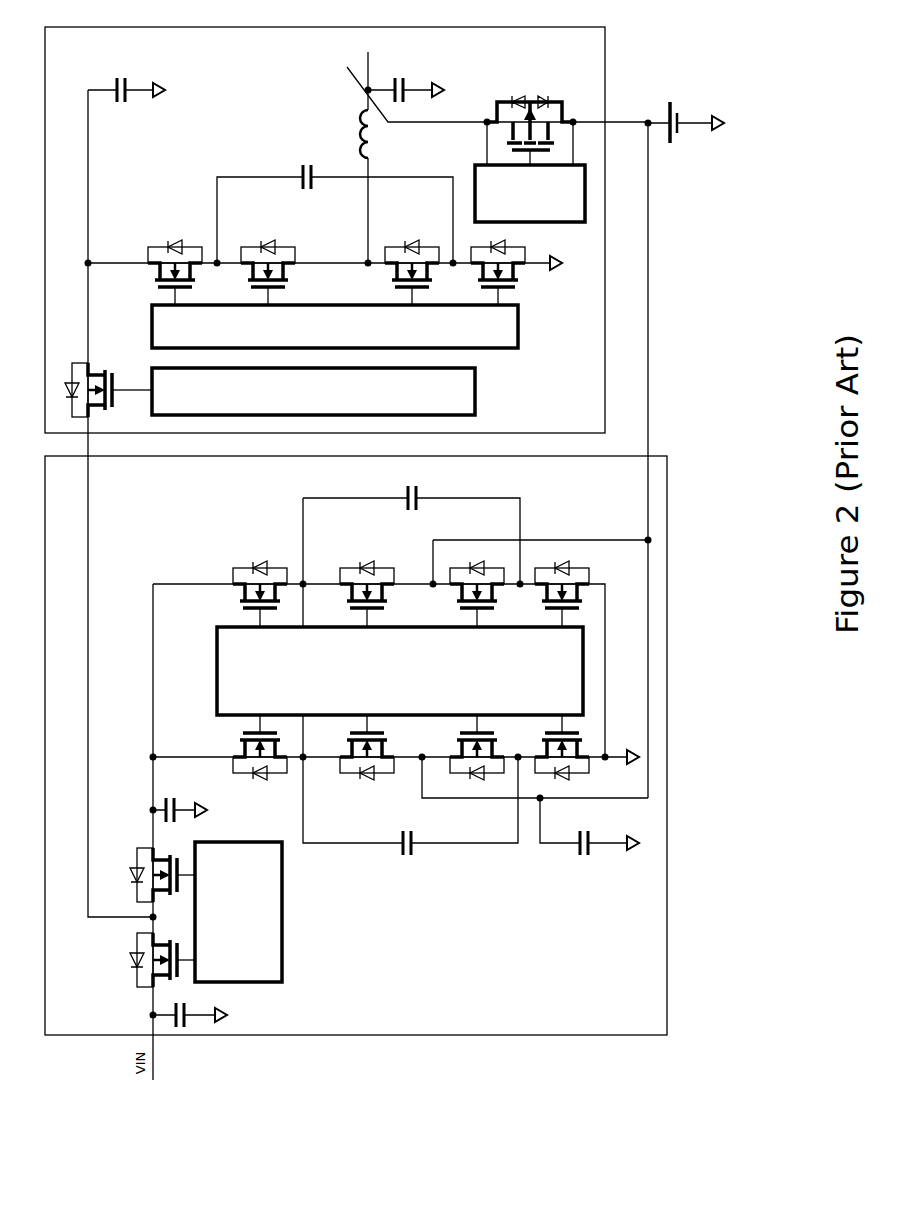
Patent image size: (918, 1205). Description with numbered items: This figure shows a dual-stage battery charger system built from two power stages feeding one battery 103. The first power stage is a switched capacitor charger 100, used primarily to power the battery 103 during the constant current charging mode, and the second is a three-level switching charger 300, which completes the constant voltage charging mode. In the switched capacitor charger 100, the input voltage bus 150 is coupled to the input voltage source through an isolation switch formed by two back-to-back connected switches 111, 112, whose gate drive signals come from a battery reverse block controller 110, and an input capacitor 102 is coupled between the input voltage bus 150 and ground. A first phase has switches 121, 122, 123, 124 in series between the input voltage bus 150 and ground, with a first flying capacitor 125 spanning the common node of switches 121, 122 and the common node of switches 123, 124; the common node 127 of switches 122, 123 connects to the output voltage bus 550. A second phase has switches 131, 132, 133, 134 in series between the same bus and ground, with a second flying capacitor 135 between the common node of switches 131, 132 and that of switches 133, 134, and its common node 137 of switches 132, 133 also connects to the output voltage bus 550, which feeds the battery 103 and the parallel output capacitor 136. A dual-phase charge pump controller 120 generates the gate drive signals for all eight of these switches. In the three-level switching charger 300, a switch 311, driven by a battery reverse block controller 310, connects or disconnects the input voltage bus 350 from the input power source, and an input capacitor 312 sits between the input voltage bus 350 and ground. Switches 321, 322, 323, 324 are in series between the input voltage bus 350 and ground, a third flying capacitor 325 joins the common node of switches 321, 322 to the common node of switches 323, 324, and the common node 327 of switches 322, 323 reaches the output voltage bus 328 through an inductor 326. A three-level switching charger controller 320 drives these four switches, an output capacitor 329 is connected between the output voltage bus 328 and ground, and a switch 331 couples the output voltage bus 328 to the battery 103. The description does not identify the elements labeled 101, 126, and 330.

The switched capacitor charger 100 is at (40, 822).
The input capacitor 101 is at (192, 1025).
The input capacitor 102 is at (158, 790).
The battery 103 is at (683, 115).
The battery reverse block controller 110 is at (285, 910).
The switch 111 is at (130, 977).
The switch 112 is at (137, 865).
The dual-phase charge pump controller 120 is at (215, 680).
The switch 121 is at (227, 573).
The switch 122 is at (357, 563).
The switch 123 is at (490, 570).
The switch 124 is at (583, 595).
The first flying capacitor 125 is at (405, 495).
The output node 126 is at (542, 525).
The common node 127 is at (425, 578).
The switch 131 is at (262, 780).
The switch 132 is at (357, 778).
The switch 133 is at (492, 778).
The switch 134 is at (583, 740).
The second flying capacitor 135 is at (398, 853).
The output capacitor 136 is at (597, 867).
The common node 137 is at (420, 765).
The input voltage bus 150 is at (150, 702).
The three-level switching charger 300 is at (40, 367).
The battery reverse block controller 310 is at (478, 390).
The switch 311 is at (78, 362).
The input capacitor 312 is at (122, 108).
The three-level switching charger controller 320 is at (520, 352).
The switch 321 is at (172, 233).
The switch 322 is at (258, 233).
The switch 323 is at (420, 245).
The switch 324 is at (522, 273).
The third flying capacitor 325 is at (302, 167).
The inductor 326 is at (373, 135).
The common node 327 is at (362, 255).
The output voltage bus 328 is at (486, 87).
The output capacitor 329 is at (408, 80).
The ground 330 is at (570, 268).
The switch 331 is at (530, 93).
The input voltage bus 350 is at (86, 213).
The output voltage bus 550 is at (645, 425).